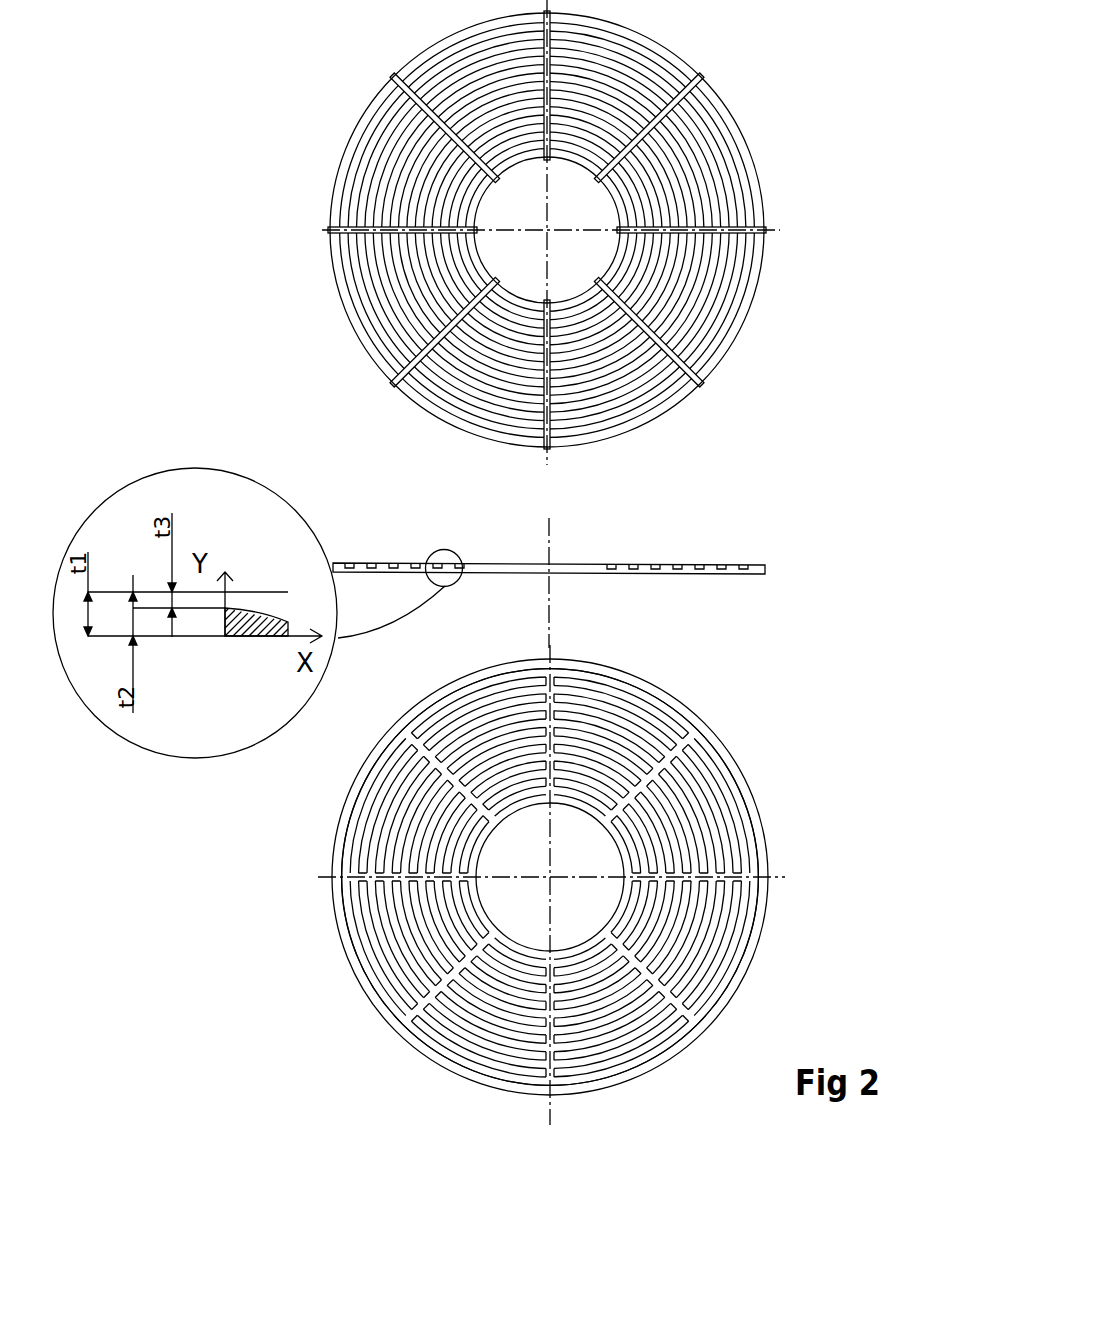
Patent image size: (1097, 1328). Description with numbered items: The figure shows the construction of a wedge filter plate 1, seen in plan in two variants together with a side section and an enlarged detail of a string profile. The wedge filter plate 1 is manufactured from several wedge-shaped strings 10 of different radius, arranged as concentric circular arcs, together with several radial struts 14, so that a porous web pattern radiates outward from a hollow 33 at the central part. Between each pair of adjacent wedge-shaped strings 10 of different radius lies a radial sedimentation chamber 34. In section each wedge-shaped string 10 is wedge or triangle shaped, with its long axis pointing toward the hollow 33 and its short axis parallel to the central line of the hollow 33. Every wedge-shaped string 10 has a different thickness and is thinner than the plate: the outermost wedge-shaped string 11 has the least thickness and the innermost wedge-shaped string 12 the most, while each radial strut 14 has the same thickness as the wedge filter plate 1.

The wedge filter plate 1 is at (840, 280).
The wedge-shaped string 10 is at (722, 807).
The outermost wedge-shaped string 11 is at (727, 352).
The innermost wedge-shaped string 12 is at (475, 267).
The radial strut 14 is at (693, 75).
The hollow 33 is at (573, 567).
The radial sedimentation chamber 34 is at (655, 405).